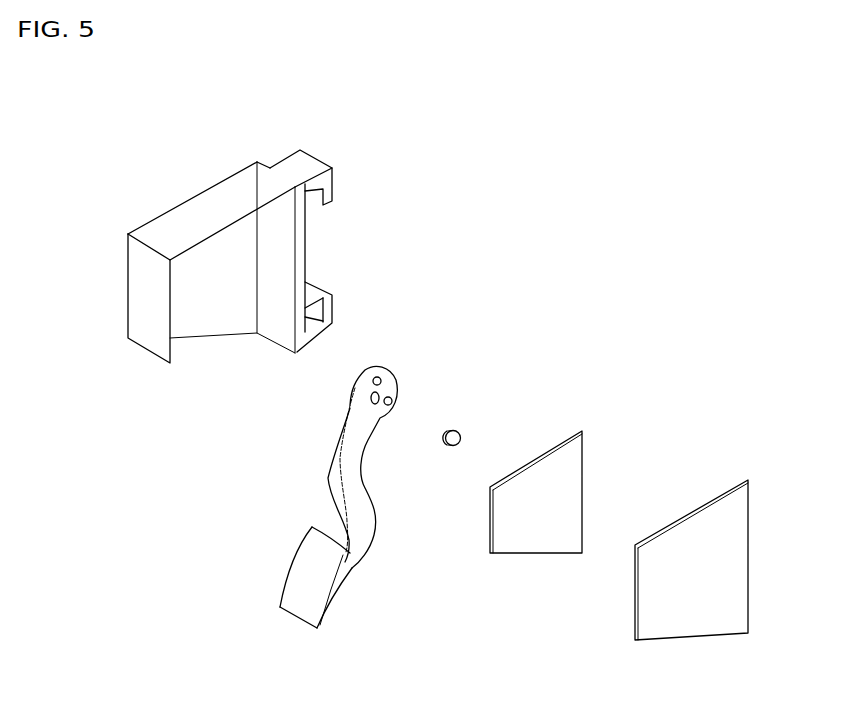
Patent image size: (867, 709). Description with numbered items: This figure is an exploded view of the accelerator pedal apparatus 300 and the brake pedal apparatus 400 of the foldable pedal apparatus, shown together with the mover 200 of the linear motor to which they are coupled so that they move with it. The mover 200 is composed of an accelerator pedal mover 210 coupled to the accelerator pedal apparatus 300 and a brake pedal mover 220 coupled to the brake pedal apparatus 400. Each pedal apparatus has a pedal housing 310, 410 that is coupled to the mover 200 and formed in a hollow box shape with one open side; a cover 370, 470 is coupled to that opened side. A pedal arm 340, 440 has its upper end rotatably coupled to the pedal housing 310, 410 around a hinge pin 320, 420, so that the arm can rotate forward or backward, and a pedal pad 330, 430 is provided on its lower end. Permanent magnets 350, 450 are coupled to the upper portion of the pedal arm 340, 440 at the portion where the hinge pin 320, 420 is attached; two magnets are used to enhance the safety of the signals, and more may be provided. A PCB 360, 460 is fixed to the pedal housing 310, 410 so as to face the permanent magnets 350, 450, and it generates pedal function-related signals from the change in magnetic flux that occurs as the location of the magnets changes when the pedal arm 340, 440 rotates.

The mover of the linear motor 200 is at (306, 219).
The accelerator pedal mover 210 is at (306, 219).
The brake pedal mover 220 is at (294, 158).
The accelerator pedal apparatus 300 is at (438, 397).
The brake pedal apparatus 400 is at (548, 272).
The pedal housing 310 is at (211, 252).
The pedal housing 410 is at (180, 218).
The hinge pin 320 is at (513, 410).
The hinge pin 420 is at (461, 432).
The pedal pad 330 is at (256, 577).
The pedal pad 430 is at (297, 572).
The pedal arm 340 is at (364, 443).
The pedal arm 440 is at (337, 452).
The permanent magnet 350 is at (449, 362).
The permanent magnet 450 is at (392, 400).
The PCB 360 is at (600, 492).
The PCB 460 is at (570, 463).
The cover 370 is at (689, 594).
The cover 470 is at (680, 627).